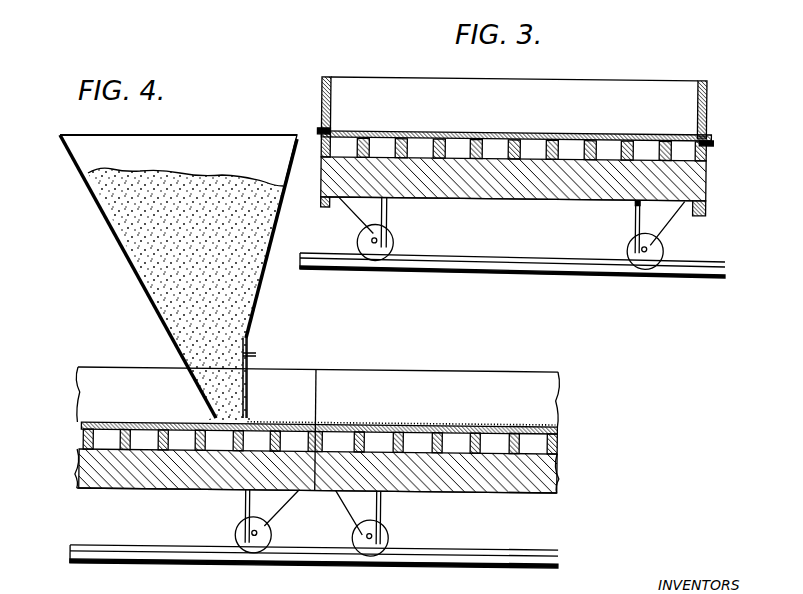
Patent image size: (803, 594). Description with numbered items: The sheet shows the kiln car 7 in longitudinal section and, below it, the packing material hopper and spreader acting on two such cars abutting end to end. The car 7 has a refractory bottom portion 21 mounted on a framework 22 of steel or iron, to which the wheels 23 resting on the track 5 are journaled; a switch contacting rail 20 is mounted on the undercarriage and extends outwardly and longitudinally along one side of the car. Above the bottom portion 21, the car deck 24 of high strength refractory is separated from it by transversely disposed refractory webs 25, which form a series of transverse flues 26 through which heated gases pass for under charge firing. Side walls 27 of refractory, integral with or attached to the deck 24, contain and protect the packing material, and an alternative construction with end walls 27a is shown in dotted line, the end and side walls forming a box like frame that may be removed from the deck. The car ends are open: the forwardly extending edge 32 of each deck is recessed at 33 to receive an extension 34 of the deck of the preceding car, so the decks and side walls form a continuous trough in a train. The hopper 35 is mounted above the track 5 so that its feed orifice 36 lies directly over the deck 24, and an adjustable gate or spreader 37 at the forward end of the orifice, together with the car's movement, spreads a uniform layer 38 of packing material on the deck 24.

In FIG. 3, the track 5 is at (515, 262).
In FIG. 4, the track 5 is at (508, 551).
In FIG. 3, the kiln car 7 is at (658, 79).
In FIG. 4, the kiln car 7 is at (79, 406).
In FIG. 3, the switch contacting rail 20 is at (634, 205).
In FIG. 3, the refractory bottom portion 21 is at (706, 196).
In FIG. 4, the refractory bottom portion 21 is at (558, 488).
In FIG. 3, the framework 22 is at (389, 221).
In FIG. 4, the framework 22 is at (247, 498).
In FIG. 3, the wheels 23 is at (395, 247).
In FIG. 4, the wheels 23 is at (238, 537).
In FIG. 3, the car deck 24 is at (461, 131).
In FIG. 4, the car deck 24 is at (560, 428).
In FIG. 3, the refractory webs 25 is at (706, 160).
In FIG. 4, the refractory webs 25 is at (561, 441).
In FIG. 3, the transverse flues 26 is at (570, 151).
In FIG. 3, the side walls 27 is at (378, 88).
In FIG. 4, the side walls 27 is at (545, 373).
In FIG. 3, the end walls 27a is at (331, 103).
In FIG. 3, the forwardly extending edge 32 is at (713, 141).
In FIG. 3, the recess 33 is at (704, 133).
In FIG. 3, the extension 34 is at (318, 130).
In FIG. 4, the hopper 35 is at (258, 300).
In FIG. 4, the feed orifice 36 is at (212, 420).
In FIG. 4, the adjustable gate or spreader 37 is at (250, 399).
In FIG. 4, the uniform layer of packing material 38 is at (466, 420).